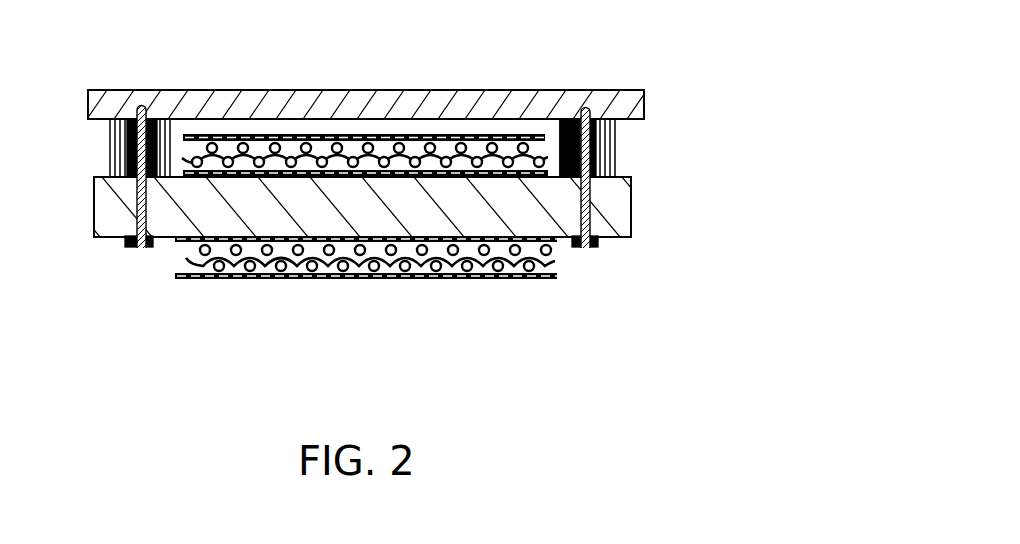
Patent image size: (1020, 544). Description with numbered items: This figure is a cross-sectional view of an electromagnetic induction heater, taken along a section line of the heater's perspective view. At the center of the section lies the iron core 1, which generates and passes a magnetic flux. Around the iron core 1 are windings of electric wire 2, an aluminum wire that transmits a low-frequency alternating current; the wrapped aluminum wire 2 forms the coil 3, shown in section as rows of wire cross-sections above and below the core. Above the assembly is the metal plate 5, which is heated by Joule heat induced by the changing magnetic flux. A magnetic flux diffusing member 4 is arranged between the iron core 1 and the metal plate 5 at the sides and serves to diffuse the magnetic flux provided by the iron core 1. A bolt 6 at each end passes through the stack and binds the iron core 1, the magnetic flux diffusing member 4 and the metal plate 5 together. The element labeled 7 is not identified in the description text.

The iron core 1 is at (631, 217).
The electric wire 2 is at (308, 328).
The coil 3 is at (366, 309).
The magnetic flux diffusing member 4 is at (110, 146).
The metal plate 5 is at (460, 90).
The bolt 6 is at (139, 248).
The insulating plate 7 is at (322, 279).